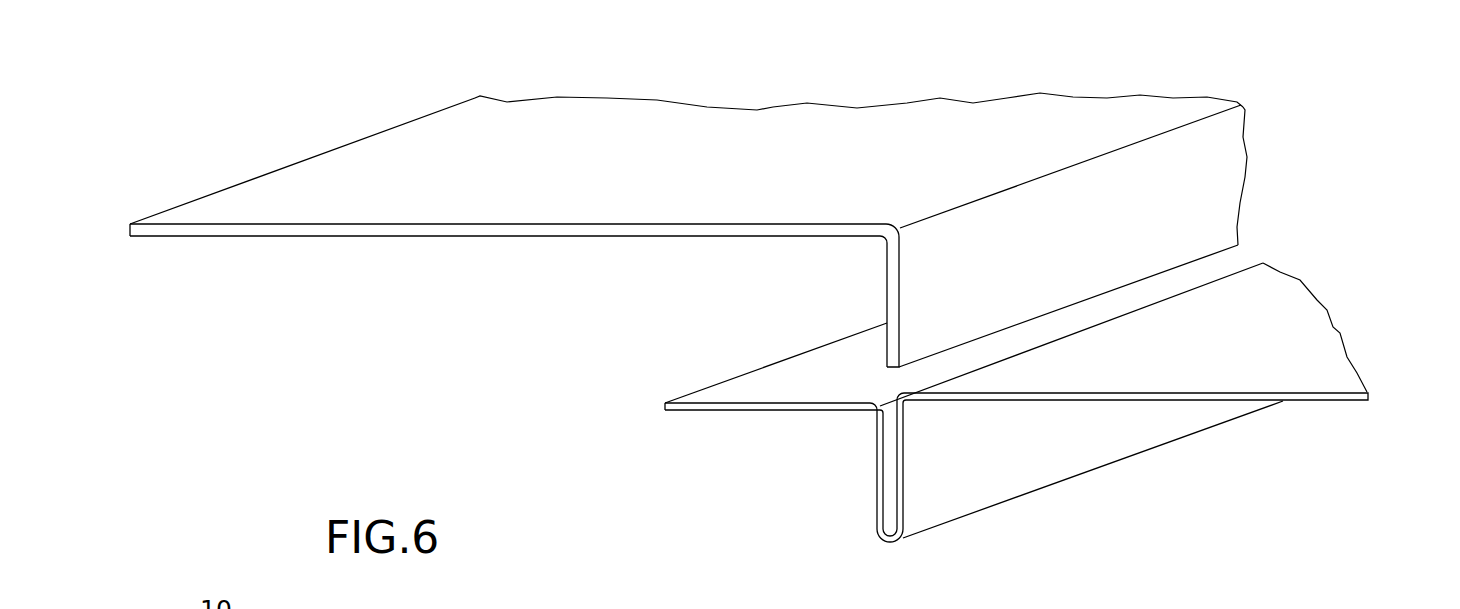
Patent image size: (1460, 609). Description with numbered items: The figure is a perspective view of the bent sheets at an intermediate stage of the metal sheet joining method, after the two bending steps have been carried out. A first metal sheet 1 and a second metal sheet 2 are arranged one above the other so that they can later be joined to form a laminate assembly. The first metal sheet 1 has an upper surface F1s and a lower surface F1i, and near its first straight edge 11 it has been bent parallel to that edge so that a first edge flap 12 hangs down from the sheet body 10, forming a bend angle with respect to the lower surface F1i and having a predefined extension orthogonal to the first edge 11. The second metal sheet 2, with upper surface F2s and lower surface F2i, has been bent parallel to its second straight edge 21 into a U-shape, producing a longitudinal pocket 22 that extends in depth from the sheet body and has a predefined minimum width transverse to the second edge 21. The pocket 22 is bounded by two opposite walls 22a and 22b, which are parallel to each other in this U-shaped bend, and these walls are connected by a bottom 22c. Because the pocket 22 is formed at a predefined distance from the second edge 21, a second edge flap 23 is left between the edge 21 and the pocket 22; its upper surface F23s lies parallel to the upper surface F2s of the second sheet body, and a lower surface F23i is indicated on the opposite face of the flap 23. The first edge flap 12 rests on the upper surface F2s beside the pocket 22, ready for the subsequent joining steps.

The first metal sheet 1 is at (757, 209).
The sheet body 10 is at (686, 204).
The first straight edge 11 is at (1238, 246).
The first edge flap 12 is at (1141, 217).
The upper surface of the first metal sheet F1s is at (457, 170).
The lower surface of the first metal sheet F1i is at (457, 237).
The second metal sheet 2 is at (973, 411).
The second straight edge 21 is at (707, 416).
The longitudinal pocket 22 is at (931, 501).
The wall 22a is at (870, 523).
The wall 22b is at (903, 473).
The bottom 22c is at (887, 543).
The second edge flap 23 is at (762, 416).
The upper surface of the second metal sheet F2s is at (1267, 343).
The lower surface of the second metal sheet F2i is at (1147, 401).
The upper surface of the second edge flap F23s is at (767, 388).
The lower surface of flat portion 23 F23i is at (775, 412).